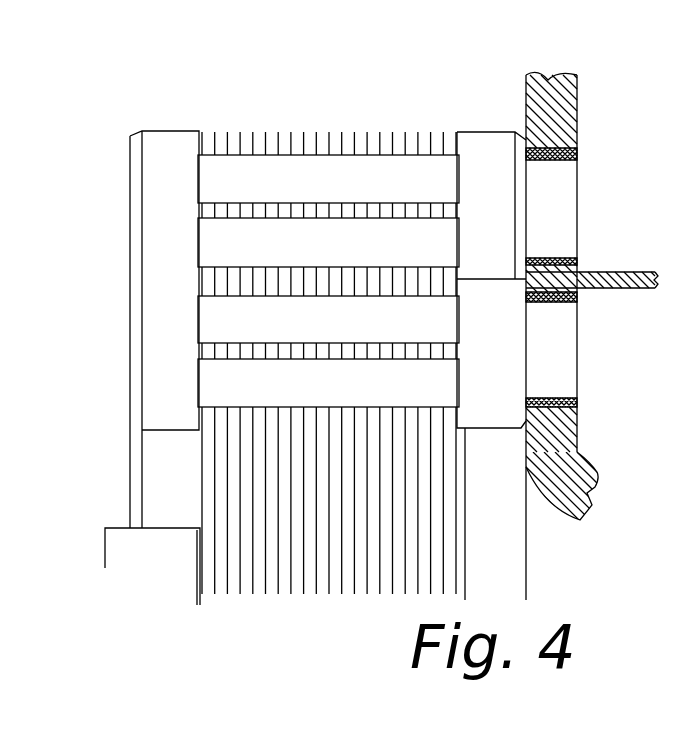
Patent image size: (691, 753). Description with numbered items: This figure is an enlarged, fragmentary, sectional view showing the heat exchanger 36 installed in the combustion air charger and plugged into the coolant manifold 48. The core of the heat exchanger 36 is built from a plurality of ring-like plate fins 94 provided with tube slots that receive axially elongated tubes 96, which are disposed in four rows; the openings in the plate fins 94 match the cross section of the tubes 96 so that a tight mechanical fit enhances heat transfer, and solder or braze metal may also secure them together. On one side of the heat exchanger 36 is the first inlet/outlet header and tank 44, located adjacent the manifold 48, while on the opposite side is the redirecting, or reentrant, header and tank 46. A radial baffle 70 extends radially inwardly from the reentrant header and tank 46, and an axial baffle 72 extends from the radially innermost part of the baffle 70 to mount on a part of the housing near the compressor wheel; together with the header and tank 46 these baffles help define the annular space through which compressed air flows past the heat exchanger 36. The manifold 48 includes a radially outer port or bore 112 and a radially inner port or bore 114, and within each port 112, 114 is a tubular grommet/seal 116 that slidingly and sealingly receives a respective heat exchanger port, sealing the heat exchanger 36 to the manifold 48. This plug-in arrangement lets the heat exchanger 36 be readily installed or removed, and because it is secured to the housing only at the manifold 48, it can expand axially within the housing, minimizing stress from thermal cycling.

The heat exchanger 36 is at (239, 360).
The first inlet/outlet header and tank 44 is at (483, 118).
The redirecting header and tank 46 is at (117, 296).
The coolant manifold 48 is at (552, 122).
The radial baffle 70 is at (197, 470).
The axial baffle 72 is at (148, 551).
The plate fins 94 is at (380, 594).
The tubes 96 is at (217, 179).
The radially outer port or bore 112 is at (553, 160).
The radially inner port or bore 114 is at (553, 406).
The tubular grommet/seal 116 is at (555, 258).